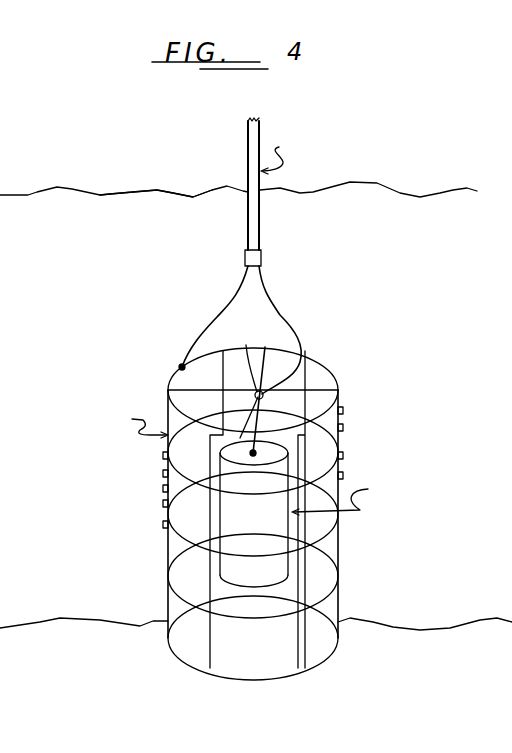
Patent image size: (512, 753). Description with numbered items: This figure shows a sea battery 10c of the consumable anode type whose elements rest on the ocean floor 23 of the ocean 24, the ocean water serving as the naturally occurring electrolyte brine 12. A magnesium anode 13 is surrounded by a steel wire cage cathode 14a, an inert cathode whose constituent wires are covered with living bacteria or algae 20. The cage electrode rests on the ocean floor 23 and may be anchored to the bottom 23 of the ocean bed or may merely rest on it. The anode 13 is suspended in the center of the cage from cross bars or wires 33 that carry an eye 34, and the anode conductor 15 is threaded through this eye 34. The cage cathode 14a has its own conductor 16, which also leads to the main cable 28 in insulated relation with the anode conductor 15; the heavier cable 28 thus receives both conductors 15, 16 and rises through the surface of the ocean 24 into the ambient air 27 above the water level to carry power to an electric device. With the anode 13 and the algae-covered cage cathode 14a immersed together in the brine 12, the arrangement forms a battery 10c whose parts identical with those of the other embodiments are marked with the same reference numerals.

The battery 10c is at (222, 512).
The naturally occurring electrolyte brine 12 is at (122, 518).
The magnesium anode 13 is at (275, 523).
The steel wire cage cathode 14a is at (345, 437).
The conductor 15 is at (312, 289).
The conductor 16 is at (216, 315).
The bacteria or algae 20 is at (342, 476).
The ocean floor 23 is at (402, 622).
The ocean 24 is at (104, 198).
The ambient air 27 is at (142, 184).
The main cable 28 is at (261, 179).
The cross bars or wires 33 is at (265, 347).
The eye 34 is at (250, 393).